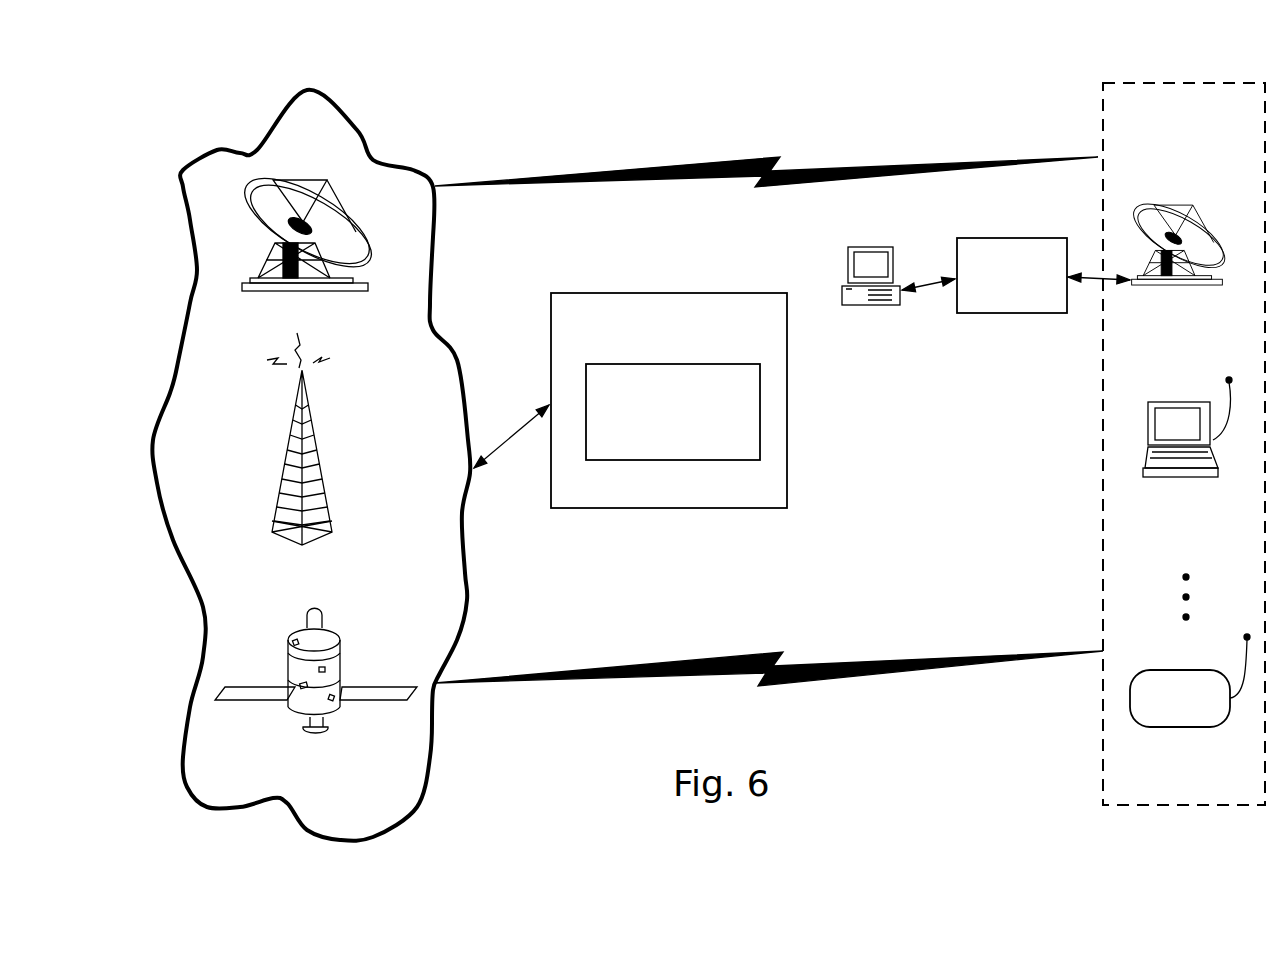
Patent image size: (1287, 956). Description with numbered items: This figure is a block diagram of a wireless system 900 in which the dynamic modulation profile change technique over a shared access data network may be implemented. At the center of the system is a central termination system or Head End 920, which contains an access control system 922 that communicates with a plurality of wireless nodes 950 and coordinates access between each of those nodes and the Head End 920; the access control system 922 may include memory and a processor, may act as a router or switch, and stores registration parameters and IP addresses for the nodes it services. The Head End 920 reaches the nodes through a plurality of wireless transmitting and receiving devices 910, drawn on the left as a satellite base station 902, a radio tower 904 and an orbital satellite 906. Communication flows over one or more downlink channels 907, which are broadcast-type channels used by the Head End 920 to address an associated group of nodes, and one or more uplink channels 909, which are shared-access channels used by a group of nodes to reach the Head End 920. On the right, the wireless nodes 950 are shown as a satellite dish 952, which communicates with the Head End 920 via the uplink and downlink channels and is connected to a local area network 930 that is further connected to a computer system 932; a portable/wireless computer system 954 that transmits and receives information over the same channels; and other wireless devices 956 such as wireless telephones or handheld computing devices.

The wireless system 900 is at (627, 118).
The satellite base station 902 is at (300, 292).
The radio tower 904 is at (302, 545).
The orbital satellite 906 is at (314, 738).
The downlink channel 907 is at (628, 180).
The uplink channel 909 is at (672, 670).
The wireless transmitting and receiving devices 910 is at (436, 772).
The Head End 920 is at (787, 400).
The access control system 922 is at (760, 453).
The local area network 930 is at (1013, 313).
The computer system 932 is at (872, 306).
The wireless nodes 950 is at (1175, 806).
The satellite dish 952 is at (1222, 284).
The portable/wireless computer system 954 is at (1212, 478).
The wireless device 956 is at (1208, 728).